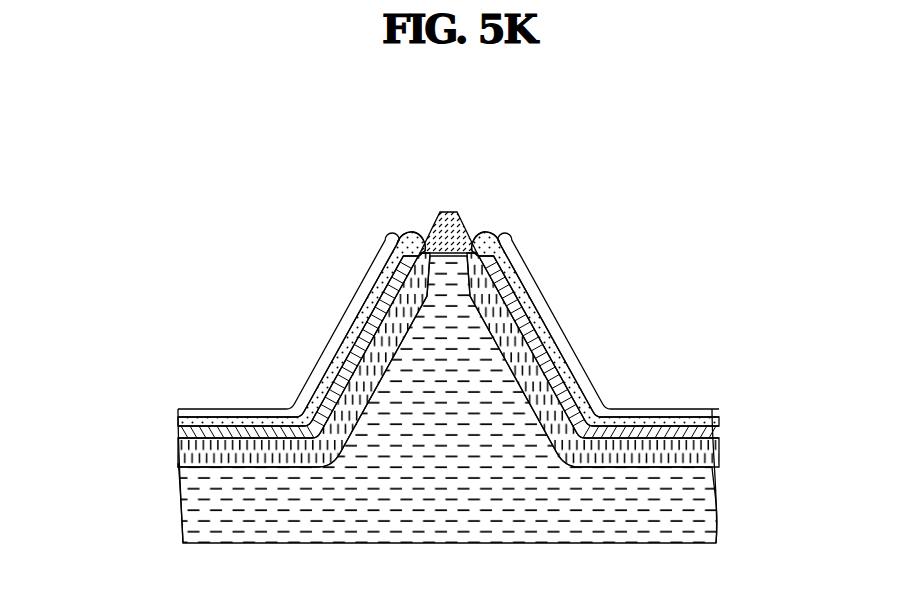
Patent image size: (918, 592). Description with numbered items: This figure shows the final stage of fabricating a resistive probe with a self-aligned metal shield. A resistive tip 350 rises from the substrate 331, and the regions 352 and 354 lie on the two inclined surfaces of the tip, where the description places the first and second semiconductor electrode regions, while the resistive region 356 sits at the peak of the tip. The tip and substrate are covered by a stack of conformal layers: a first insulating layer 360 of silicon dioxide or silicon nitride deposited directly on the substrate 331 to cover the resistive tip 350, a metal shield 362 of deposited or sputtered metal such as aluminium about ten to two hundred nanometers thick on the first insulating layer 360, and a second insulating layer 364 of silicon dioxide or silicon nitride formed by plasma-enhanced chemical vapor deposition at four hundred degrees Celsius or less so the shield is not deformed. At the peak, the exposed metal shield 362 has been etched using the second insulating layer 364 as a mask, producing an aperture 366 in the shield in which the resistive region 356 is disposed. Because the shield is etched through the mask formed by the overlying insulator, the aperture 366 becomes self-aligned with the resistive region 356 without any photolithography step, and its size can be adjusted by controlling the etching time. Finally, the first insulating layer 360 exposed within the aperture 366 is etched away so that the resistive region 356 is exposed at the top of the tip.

The substrate 331 is at (467, 490).
The resistive tip 350 is at (657, 236).
The first source/drain region 352 is at (193, 451).
The second source/drain region 354 is at (700, 457).
The resistive region 356 is at (466, 231).
The first insulating layer 360 is at (560, 386).
The metal shield 362 is at (543, 328).
The second insulating layer 364 is at (525, 272).
The aperture 366 is at (421, 239).